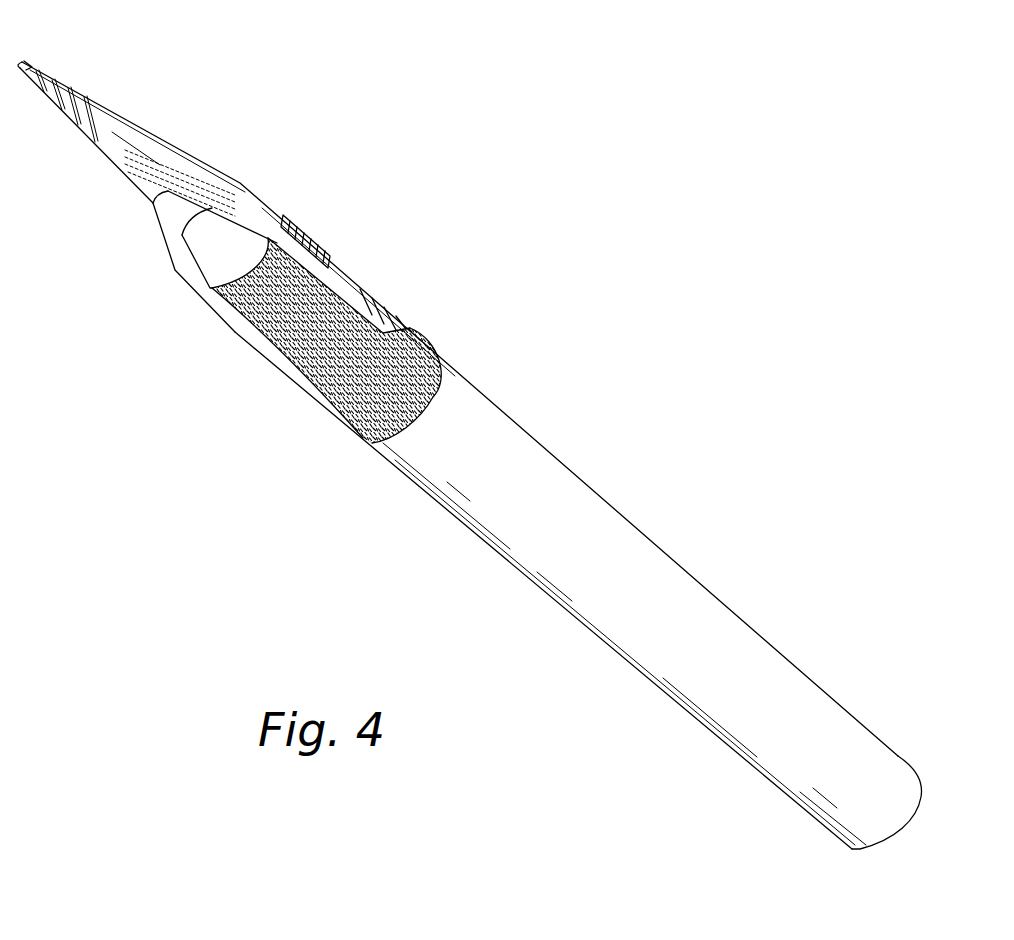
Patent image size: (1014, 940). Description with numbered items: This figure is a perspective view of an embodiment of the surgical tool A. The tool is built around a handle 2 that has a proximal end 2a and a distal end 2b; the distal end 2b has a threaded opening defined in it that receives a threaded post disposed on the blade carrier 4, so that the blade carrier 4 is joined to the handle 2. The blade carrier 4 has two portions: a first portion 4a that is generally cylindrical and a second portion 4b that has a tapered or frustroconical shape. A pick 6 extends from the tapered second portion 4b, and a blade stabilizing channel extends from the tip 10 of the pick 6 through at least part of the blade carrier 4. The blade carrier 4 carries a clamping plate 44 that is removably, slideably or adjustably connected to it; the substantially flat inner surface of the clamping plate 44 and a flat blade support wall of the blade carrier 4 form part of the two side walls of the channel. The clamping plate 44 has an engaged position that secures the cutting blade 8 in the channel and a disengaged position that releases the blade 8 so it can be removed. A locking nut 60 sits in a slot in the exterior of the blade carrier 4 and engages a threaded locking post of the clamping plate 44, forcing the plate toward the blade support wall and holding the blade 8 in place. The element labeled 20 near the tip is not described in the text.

The handle 2 is at (681, 543).
The proximal end 2a is at (896, 752).
The distal end 2b is at (390, 468).
The blade carrier 4 is at (244, 373).
The first portion 4a is at (422, 330).
The second portion 4b is at (172, 266).
The pick 6 is at (88, 158).
The cutting blade 8 is at (147, 140).
The tip 10 is at (20, 92).
The distal tip 20 is at (28, 62).
The clamping plate 44 is at (332, 418).
The locking nut 60 is at (313, 233).
The surgical tool A is at (480, 203).